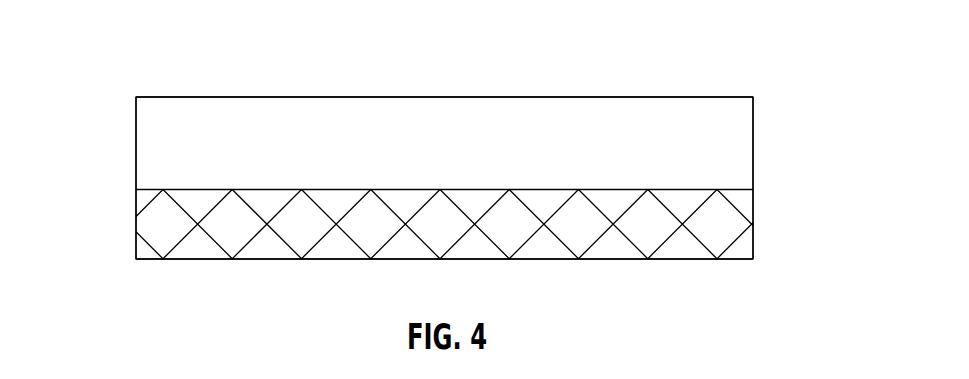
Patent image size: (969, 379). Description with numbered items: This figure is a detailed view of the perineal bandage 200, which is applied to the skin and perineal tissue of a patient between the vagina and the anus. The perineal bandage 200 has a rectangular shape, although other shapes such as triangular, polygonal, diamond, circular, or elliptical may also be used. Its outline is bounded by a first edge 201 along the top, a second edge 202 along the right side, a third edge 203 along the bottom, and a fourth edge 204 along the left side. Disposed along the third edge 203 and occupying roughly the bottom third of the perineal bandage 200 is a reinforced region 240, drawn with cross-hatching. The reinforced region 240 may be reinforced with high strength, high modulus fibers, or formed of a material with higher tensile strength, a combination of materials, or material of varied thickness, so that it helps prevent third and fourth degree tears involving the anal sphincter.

The perineal bandage 200 is at (218, 35).
The first edge 201 is at (563, 78).
The second edge 202 is at (778, 143).
The third edge 203 is at (330, 273).
The fourth edge 204 is at (120, 167).
The reinforced region 240 is at (731, 235).